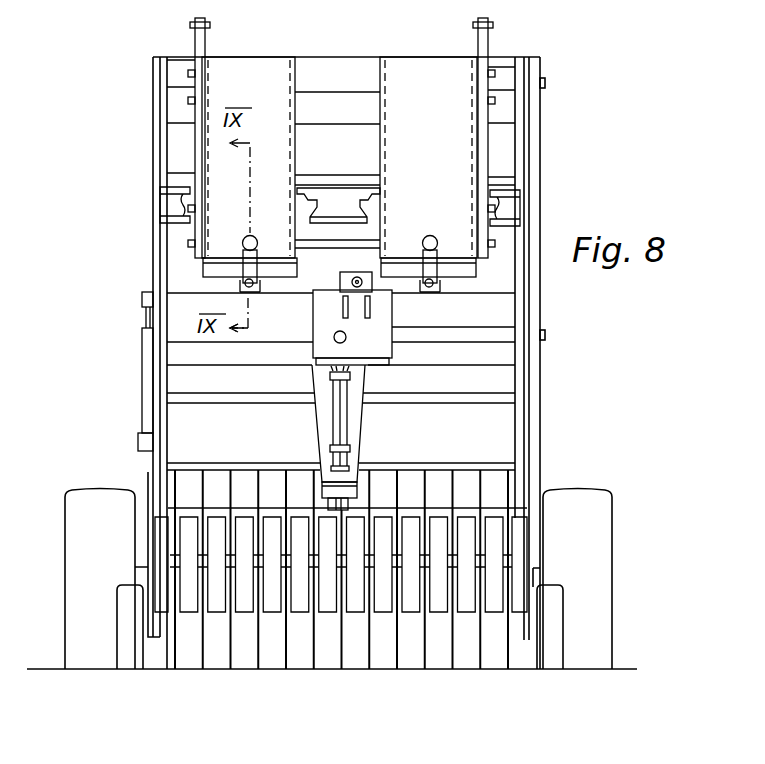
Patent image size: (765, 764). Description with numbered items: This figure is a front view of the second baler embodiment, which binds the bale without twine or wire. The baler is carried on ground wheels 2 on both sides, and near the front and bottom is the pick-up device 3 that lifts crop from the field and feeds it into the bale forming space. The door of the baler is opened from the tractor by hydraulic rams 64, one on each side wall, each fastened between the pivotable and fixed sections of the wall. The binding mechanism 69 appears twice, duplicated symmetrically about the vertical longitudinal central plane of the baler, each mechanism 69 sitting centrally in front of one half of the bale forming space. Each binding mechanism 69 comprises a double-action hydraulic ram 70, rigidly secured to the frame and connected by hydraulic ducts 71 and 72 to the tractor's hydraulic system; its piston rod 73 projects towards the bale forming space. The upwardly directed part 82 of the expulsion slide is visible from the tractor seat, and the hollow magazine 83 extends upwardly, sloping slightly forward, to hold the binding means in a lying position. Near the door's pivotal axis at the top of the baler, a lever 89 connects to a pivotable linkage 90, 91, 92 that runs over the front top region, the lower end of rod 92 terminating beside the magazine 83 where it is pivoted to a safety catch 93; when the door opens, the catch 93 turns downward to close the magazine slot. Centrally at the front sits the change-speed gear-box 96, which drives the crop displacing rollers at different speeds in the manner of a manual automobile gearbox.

The ground wheels 2 is at (68, 523).
The pick-up device 3 is at (387, 587).
The hydraulic rams 64 is at (147, 384).
The binding mechanism 69 is at (389, 52).
The double-action hydraulic ram 70 is at (257, 246).
The hydraulic duct 71 is at (333, 386).
The hydraulic duct 72 is at (334, 429).
The piston rod 73 is at (255, 292).
The upwardly directed part 82 is at (247, 236).
The magazine 83 is at (380, 104).
The lever 89 is at (205, 34).
The pivotable linkage member 90 is at (195, 34).
The pivotable linkage member 91 is at (196, 86).
The rod 92 is at (195, 147).
The safety catch 93 is at (373, 200).
The change-speed gear-box 96 is at (392, 309).